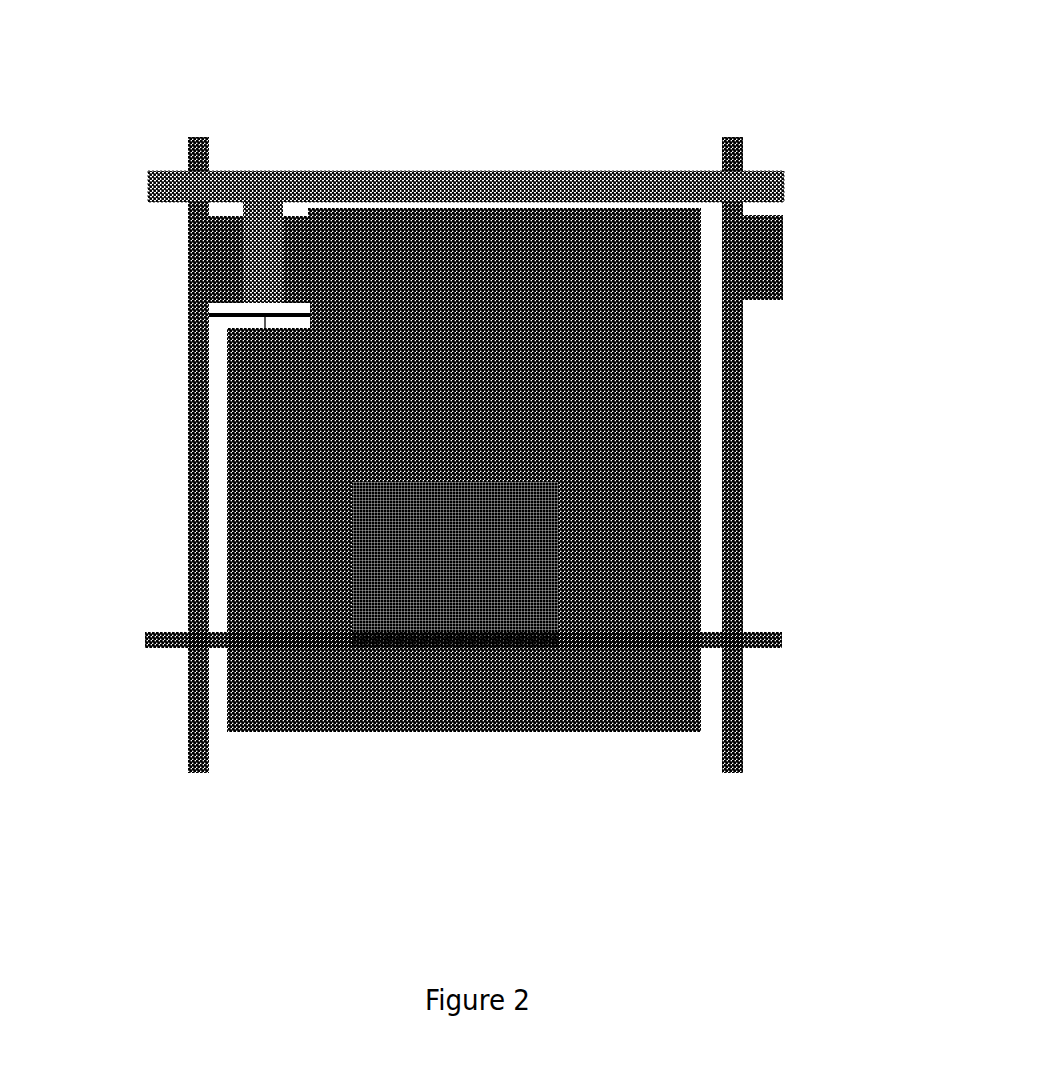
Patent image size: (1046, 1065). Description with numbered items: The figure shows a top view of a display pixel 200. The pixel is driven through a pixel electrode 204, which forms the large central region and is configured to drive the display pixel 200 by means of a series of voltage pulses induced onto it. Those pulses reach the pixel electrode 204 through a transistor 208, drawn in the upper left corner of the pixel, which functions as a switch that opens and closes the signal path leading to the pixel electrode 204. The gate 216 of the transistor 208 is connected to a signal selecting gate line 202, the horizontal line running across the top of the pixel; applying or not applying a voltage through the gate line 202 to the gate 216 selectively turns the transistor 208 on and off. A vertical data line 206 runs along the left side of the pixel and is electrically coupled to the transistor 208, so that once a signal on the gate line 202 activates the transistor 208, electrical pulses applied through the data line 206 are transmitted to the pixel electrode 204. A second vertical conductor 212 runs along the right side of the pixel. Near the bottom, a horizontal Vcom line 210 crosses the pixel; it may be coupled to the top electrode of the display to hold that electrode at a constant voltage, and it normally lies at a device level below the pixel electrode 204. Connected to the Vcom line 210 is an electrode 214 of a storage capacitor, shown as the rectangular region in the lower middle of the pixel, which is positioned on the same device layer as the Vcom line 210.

The display pixel 200 is at (462, 390).
The gate line 202 is at (779, 183).
The pixel electrode 204 is at (525, 233).
The data line 206 is at (203, 140).
The transistor 208 is at (265, 322).
The Vcom line 210 is at (145, 638).
The right conductive via 212 is at (740, 462).
The electrode of a storage capacitor 214 is at (468, 566).
The gate 216 is at (263, 250).